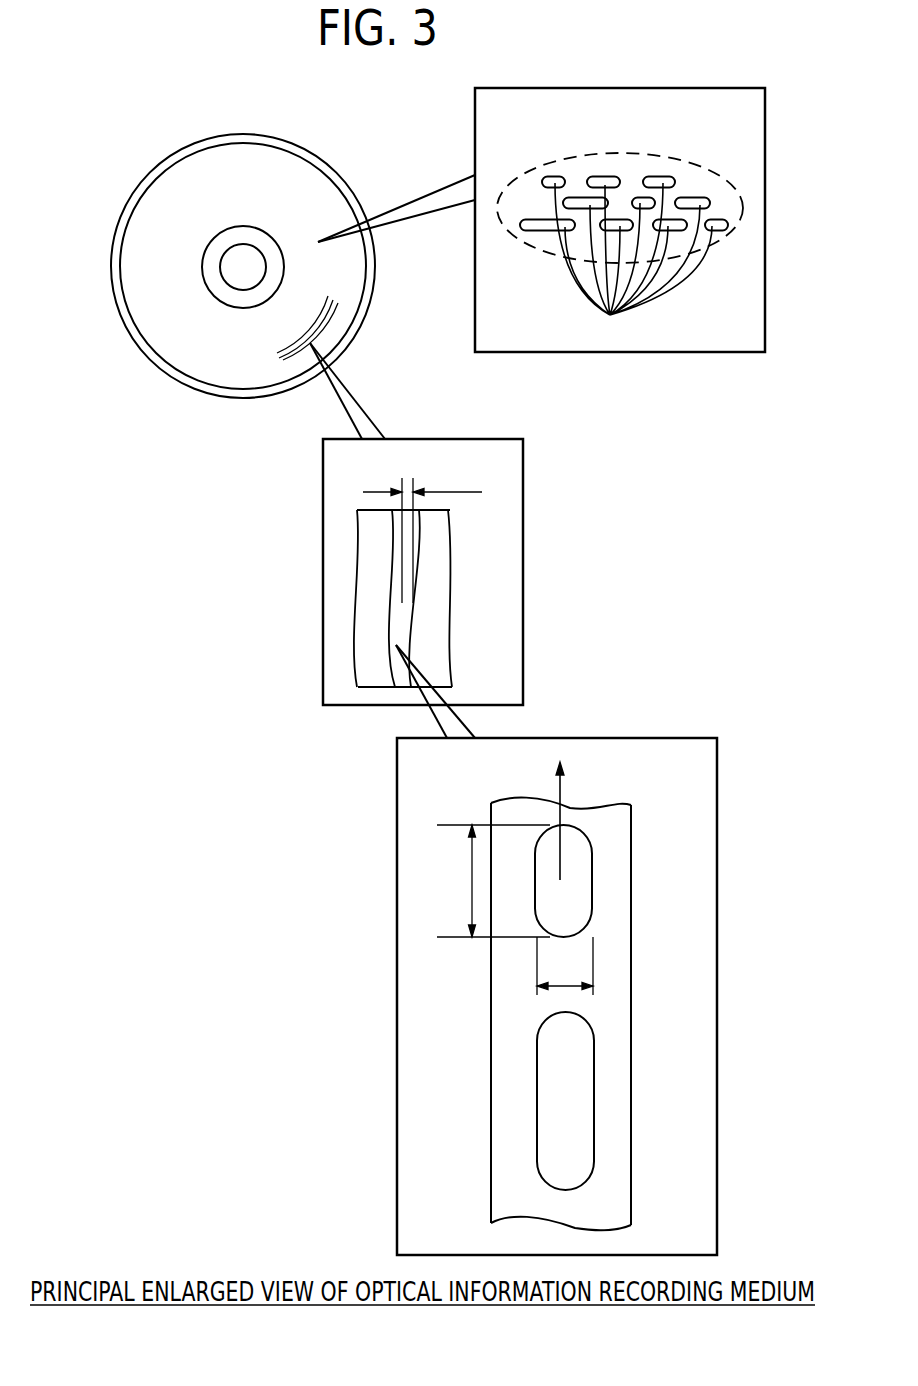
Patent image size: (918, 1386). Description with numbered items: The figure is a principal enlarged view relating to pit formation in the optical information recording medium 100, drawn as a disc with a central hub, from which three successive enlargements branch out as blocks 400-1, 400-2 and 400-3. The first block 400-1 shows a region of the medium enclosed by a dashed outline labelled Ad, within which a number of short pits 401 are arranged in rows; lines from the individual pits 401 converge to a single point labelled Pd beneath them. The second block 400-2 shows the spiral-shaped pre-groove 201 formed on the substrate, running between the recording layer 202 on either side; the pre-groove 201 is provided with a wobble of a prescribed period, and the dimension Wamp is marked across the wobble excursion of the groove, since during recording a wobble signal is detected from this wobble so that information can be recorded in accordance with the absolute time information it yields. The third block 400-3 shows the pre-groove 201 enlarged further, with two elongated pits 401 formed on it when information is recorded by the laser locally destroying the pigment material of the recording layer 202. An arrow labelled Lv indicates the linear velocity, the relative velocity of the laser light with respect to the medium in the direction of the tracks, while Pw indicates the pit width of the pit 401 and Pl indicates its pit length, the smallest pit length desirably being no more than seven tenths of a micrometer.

The optical information recording medium 100 is at (270, 195).
The block 400-1 is at (593, 352).
The block 400-2 is at (523, 598).
The block 400-3 is at (638, 738).
The pit 401 is at (657, 178).
The pre-groove 201 is at (403, 625).
The recording layer 202 is at (436, 545).
The address area Ad is at (641, 155).
The pit depth / pit data convergence Pd is at (633, 265).
The wobble amplitude Wamp is at (436, 534).
The linear velocity Lv is at (581, 819).
The pit length Pl is at (493, 881).
The pit width Pw is at (565, 966).